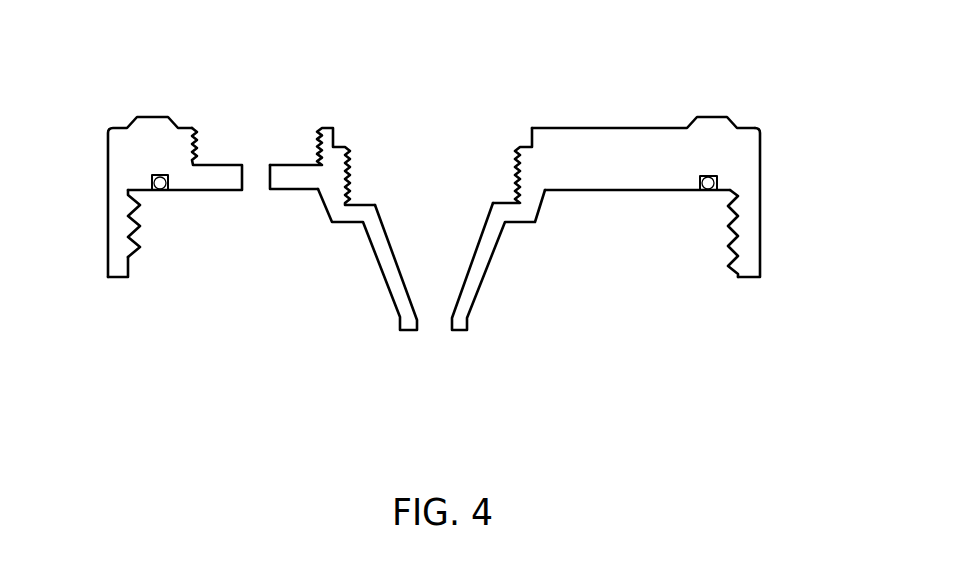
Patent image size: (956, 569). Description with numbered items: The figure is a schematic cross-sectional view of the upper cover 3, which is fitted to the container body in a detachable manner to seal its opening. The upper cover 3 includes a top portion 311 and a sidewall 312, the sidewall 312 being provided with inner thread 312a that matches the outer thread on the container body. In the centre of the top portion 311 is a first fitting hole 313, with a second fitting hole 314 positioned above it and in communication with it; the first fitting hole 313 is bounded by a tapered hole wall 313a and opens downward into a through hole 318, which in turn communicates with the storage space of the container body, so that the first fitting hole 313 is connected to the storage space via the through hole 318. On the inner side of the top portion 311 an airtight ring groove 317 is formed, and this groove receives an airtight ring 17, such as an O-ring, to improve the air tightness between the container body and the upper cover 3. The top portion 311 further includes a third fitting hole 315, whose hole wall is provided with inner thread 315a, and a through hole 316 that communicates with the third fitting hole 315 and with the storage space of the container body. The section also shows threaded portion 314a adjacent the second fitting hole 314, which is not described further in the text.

The upper cover 3 is at (753, 126).
The airtight ring 17 is at (155, 177).
The top portion 311 is at (630, 137).
The sidewall 312 is at (753, 223).
The inner thread 312a is at (140, 253).
The first fitting hole 313 is at (432, 250).
The tapered hole wall 313a is at (383, 262).
The second fitting hole 314 is at (426, 172).
The threaded portion 314a is at (523, 170).
The third fitting hole 315 is at (262, 145).
The inner thread 315a is at (318, 140).
The through hole 316 is at (255, 175).
The airtight ring groove 317 is at (160, 190).
The through hole 318 is at (432, 330).